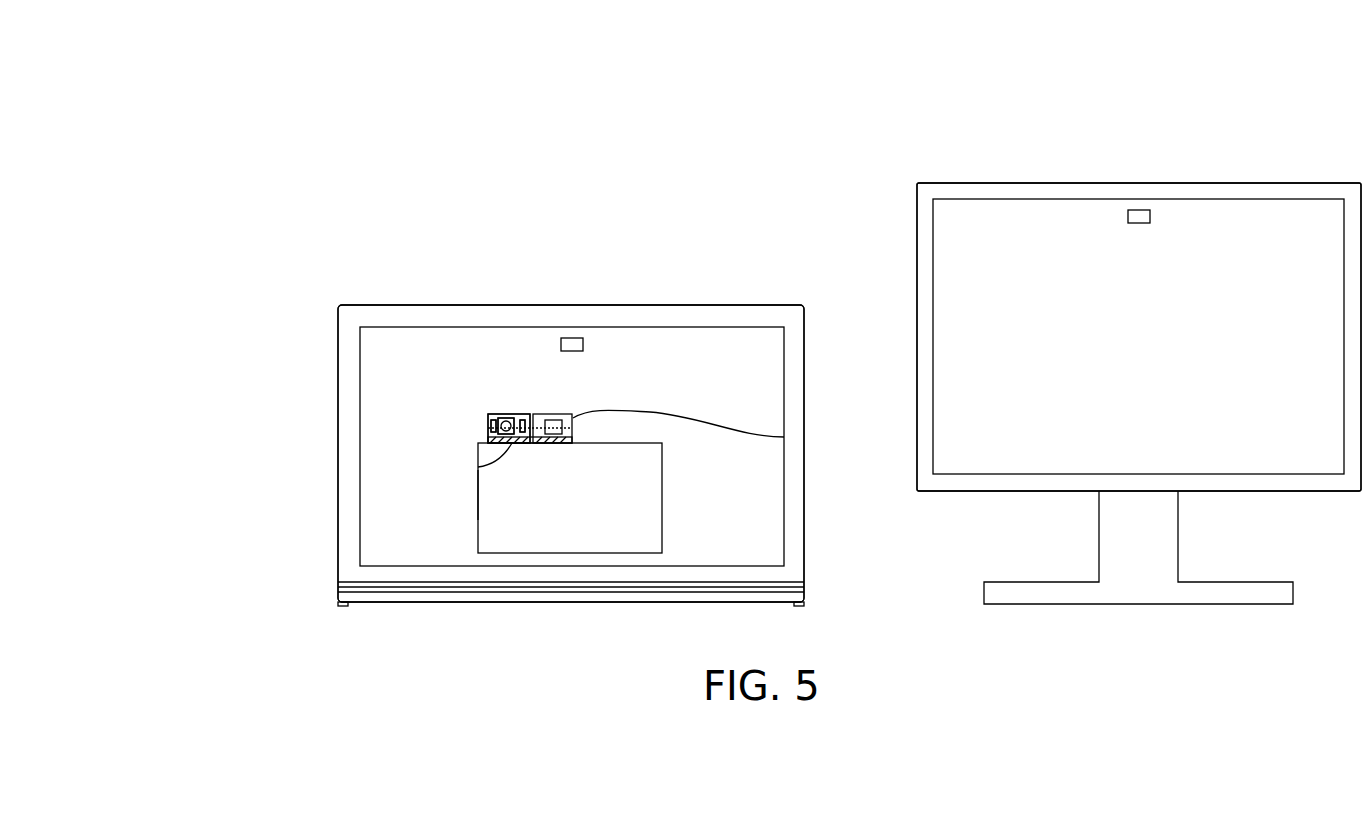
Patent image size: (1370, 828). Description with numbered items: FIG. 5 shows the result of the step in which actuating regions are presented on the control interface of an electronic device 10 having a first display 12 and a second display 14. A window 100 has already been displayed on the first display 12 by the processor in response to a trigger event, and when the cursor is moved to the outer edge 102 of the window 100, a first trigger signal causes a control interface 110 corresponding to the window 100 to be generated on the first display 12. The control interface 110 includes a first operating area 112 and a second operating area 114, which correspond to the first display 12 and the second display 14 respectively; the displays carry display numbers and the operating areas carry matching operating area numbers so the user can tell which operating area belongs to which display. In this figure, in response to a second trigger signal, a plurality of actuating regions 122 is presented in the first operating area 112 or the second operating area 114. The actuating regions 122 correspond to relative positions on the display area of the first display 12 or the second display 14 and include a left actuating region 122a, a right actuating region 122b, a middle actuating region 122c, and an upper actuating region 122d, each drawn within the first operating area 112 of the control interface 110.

The electronic device 10 is at (668, 114).
The first display 12 is at (706, 305).
The second display 14 is at (1022, 183).
The window 100 is at (523, 540).
The outer edge 102 is at (478, 495).
The control interface 110 is at (585, 409).
The first operating area 112 is at (478, 467).
The second operating area 114 is at (784, 437).
The actuating regions 122 is at (262, 358).
The left actuating region 122a is at (487, 422).
The right actuating region 122b is at (487, 436).
The middle actuating region 122c is at (487, 418).
The upper actuating region 122d is at (487, 428).